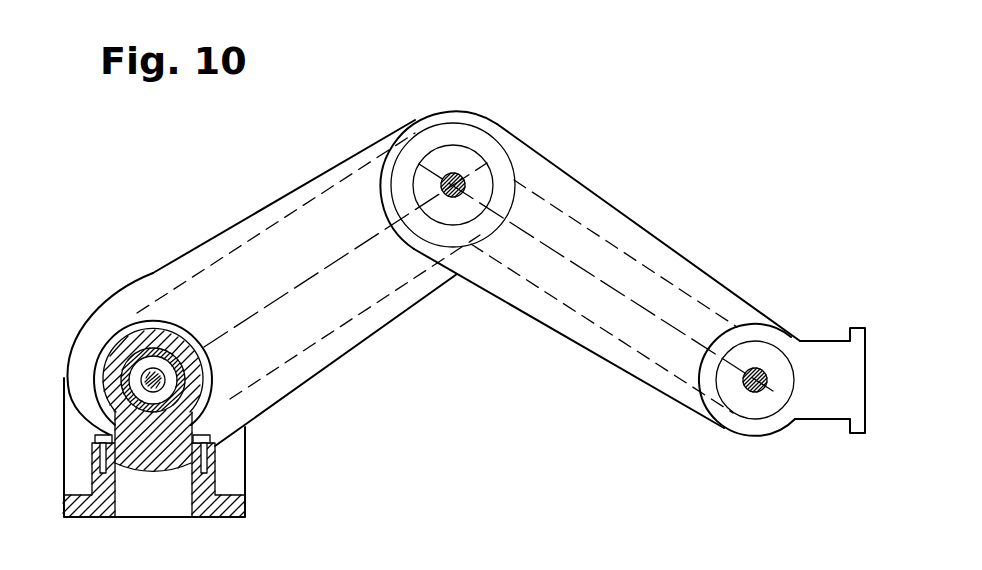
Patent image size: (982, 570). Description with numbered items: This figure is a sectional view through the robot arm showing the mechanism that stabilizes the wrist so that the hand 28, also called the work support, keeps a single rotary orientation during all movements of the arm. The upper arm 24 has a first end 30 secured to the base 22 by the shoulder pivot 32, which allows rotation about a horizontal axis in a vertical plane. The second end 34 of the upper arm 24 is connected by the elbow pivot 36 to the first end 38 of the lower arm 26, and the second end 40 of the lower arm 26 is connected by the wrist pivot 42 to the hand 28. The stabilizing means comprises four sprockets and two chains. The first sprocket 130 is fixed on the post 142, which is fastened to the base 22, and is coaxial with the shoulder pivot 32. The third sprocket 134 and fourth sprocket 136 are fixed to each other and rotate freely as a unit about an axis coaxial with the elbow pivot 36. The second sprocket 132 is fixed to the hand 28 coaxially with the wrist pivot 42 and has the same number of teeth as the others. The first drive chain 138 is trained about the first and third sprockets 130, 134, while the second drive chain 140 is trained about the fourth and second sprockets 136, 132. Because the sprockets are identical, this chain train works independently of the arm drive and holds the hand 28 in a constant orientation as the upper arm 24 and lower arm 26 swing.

The base 22 is at (246, 491).
The upper arm 24 is at (357, 154).
The lower arm 26 is at (535, 150).
The hand 28 is at (825, 353).
The first end of upper arm 30 is at (96, 307).
The shoulder pivot 32 is at (165, 372).
The second end of upper arm 34 is at (420, 300).
The elbow pivot 36 is at (448, 178).
The first end of lower arm 38 is at (467, 110).
The second end of lower arm 40 is at (706, 418).
The wrist pivot 42 is at (753, 393).
The first sprocket 130 is at (213, 356).
The second sprocket 132 is at (750, 340).
The third sprocket 134 is at (445, 123).
The fourth sprocket 136 is at (580, 228).
The first drive chain 138 is at (312, 186).
The second drive chain 140 is at (565, 211).
The post 142 is at (213, 397).